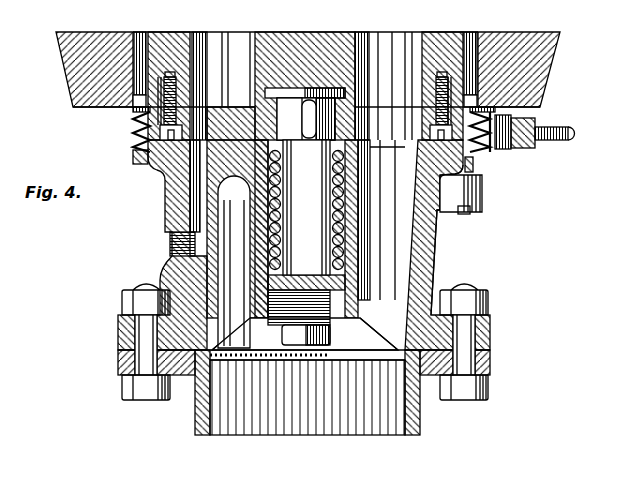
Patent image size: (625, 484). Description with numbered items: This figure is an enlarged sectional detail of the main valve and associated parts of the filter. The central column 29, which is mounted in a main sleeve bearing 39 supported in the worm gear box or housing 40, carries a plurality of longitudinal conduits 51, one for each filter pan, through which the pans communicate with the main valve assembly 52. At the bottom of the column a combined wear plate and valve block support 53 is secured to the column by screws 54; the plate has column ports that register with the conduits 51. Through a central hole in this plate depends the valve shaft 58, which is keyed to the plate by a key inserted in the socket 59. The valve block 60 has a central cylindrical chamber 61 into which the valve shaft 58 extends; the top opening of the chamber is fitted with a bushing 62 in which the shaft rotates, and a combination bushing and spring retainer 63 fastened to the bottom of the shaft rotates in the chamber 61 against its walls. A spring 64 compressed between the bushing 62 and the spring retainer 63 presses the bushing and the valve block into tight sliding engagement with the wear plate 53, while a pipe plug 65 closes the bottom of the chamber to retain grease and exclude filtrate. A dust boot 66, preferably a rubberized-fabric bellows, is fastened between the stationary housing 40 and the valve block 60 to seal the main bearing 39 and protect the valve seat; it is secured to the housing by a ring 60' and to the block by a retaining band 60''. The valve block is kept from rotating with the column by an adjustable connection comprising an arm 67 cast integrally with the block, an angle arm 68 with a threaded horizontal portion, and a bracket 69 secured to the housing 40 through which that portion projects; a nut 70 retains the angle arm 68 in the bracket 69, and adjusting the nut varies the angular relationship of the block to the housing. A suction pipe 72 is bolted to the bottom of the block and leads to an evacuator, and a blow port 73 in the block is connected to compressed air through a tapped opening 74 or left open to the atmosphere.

The central column 29 is at (311, 34).
The main sleeve bearing 39 is at (478, 33).
The worm gear box or housing 40 is at (543, 70).
The longitudinal conduits 51 is at (405, 42).
The main valve assembly 52 is at (437, 233).
The combined wear plate and valve block support 53 is at (432, 108).
The screws 54 is at (430, 122).
The valve shaft 58 is at (277, 122).
The socket 59 is at (309, 138).
The valve block 60 is at (304, 245).
The ring 60' is at (117, 122).
The retaining band 60'' is at (288, 167).
The central cylindrical chamber 61 is at (275, 238).
The bushing 62 is at (347, 150).
The combination bushing and spring retainer 63 is at (347, 276).
The spring 64 is at (346, 217).
The pipe plug 65 is at (339, 320).
The dust boot 66 is at (134, 150).
The arm 67 is at (482, 200).
The angle arm 68 is at (575, 133).
The bracket 69 is at (508, 150).
The nut 70 is at (533, 143).
The suction pipe 72 is at (420, 420).
The blow port 73 is at (191, 200).
The tapped opening 74 is at (171, 243).